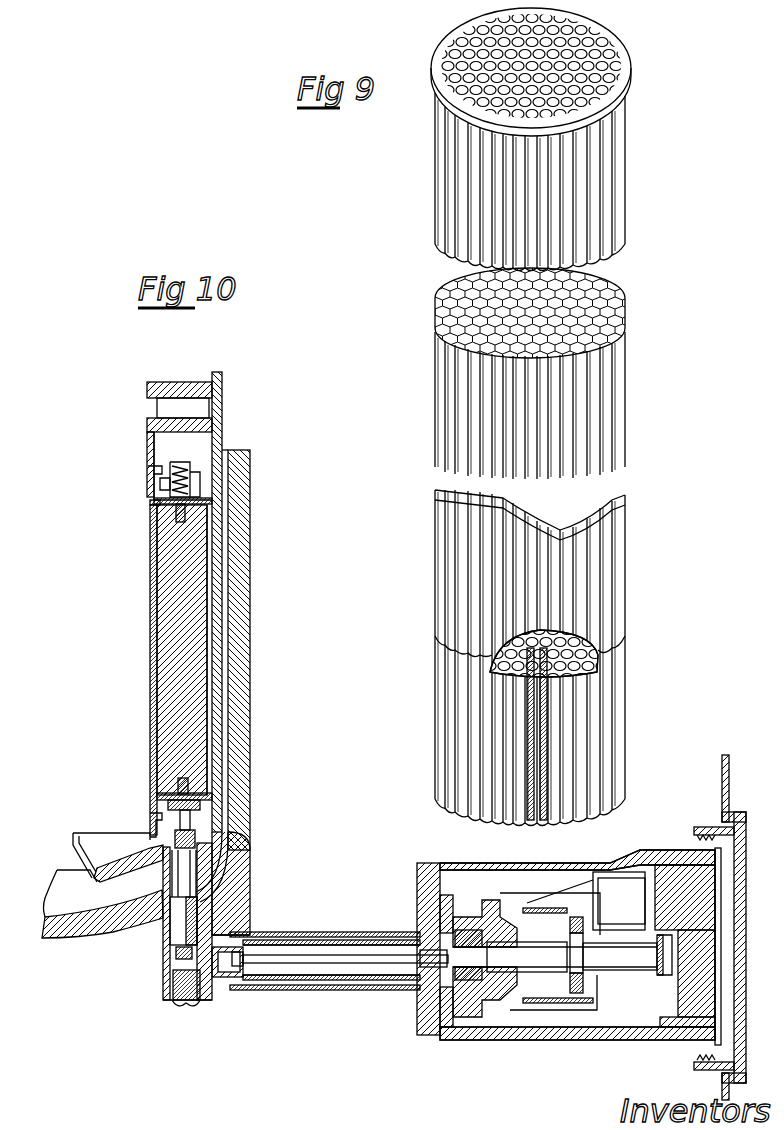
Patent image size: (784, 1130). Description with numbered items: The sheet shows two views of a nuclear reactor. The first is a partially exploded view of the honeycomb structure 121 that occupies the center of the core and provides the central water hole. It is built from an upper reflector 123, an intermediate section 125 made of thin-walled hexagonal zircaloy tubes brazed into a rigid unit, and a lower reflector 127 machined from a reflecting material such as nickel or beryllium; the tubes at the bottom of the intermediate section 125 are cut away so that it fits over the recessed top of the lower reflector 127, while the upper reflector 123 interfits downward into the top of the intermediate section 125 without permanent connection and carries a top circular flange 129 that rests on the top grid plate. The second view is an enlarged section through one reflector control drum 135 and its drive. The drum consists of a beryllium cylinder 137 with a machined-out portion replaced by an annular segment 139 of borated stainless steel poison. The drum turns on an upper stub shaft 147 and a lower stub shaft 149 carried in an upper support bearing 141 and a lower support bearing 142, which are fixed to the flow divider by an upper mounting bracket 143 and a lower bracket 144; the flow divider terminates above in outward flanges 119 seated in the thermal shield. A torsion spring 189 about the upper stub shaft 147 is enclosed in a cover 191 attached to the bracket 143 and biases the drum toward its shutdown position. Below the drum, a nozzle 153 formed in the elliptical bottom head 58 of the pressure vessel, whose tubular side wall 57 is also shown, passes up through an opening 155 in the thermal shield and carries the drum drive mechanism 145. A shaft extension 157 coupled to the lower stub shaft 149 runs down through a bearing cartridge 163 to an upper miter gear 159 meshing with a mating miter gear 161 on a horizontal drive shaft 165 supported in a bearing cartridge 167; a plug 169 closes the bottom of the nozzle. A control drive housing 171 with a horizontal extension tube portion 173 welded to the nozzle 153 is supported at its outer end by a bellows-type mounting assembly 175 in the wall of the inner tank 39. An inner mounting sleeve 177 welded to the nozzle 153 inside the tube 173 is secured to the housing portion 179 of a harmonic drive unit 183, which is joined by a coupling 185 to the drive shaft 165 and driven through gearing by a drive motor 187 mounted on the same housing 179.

In FIG. 10, the inner tank 39 is at (730, 764).
In FIG. 10, the side wall 57 is at (245, 598).
In FIG. 10, the bottom head 58 is at (55, 927).
In FIG. 10, the flanges 119 is at (190, 405).
In FIG. 9, the honeycomb structure 121 is at (677, 167).
In FIG. 9, the upper reflector 123 is at (440, 162).
In FIG. 9, the intermediate section 125 is at (617, 373).
In FIG. 9, the lower reflector 127 is at (440, 706).
In FIG. 9, the top circular flange 129 is at (632, 80).
In FIG. 10, the reflector control drum 135 is at (205, 503).
In FIG. 10, the cylinder 137 is at (175, 680).
In FIG. 10, the annular segment of poison material 139 is at (155, 604).
In FIG. 10, the upper support bearing 141 is at (152, 503).
In FIG. 10, the lower support bearing 142 is at (160, 798).
In FIG. 10, the upper mounting bracket 143 is at (155, 488).
In FIG. 10, the lower bracket 144 is at (155, 822).
In FIG. 10, the drum drive mechanism 145 is at (352, 912).
In FIG. 10, the upper stub shaft 147 is at (186, 514).
In FIG. 10, the lower stub shaft 149 is at (190, 782).
In FIG. 10, the nozzle 153 is at (213, 922).
In FIG. 10, the opening 155 is at (203, 835).
In FIG. 10, the shaft extension 157 is at (197, 888).
In FIG. 10, the upper miter gear 159 is at (177, 953).
In FIG. 10, the mating miter gear 161 is at (180, 970).
In FIG. 10, the bearing cartridge 163 is at (165, 927).
In FIG. 10, the horizontal drive shaft 165 is at (292, 945).
In FIG. 10, the bearing cartridge 167 is at (230, 977).
In FIG. 10, the plug 169 is at (178, 1003).
In FIG. 10, the control drive housing 171 is at (422, 884).
In FIG. 10, the horizontal extension tube portion 173 is at (310, 990).
In FIG. 10, the bellows-type mounting assembly 175 is at (697, 835).
In FIG. 10, the inner mounting sleeve 177 is at (367, 980).
In FIG. 10, the housing portion 179 is at (500, 905).
In FIG. 10, the harmonic drive unit 183 is at (605, 985).
In FIG. 10, the coupling 185 is at (432, 951).
In FIG. 10, the drive motor 187 is at (632, 903).
In FIG. 10, the torsion spring 189 is at (200, 472).
In FIG. 10, the cover 191 is at (172, 468).